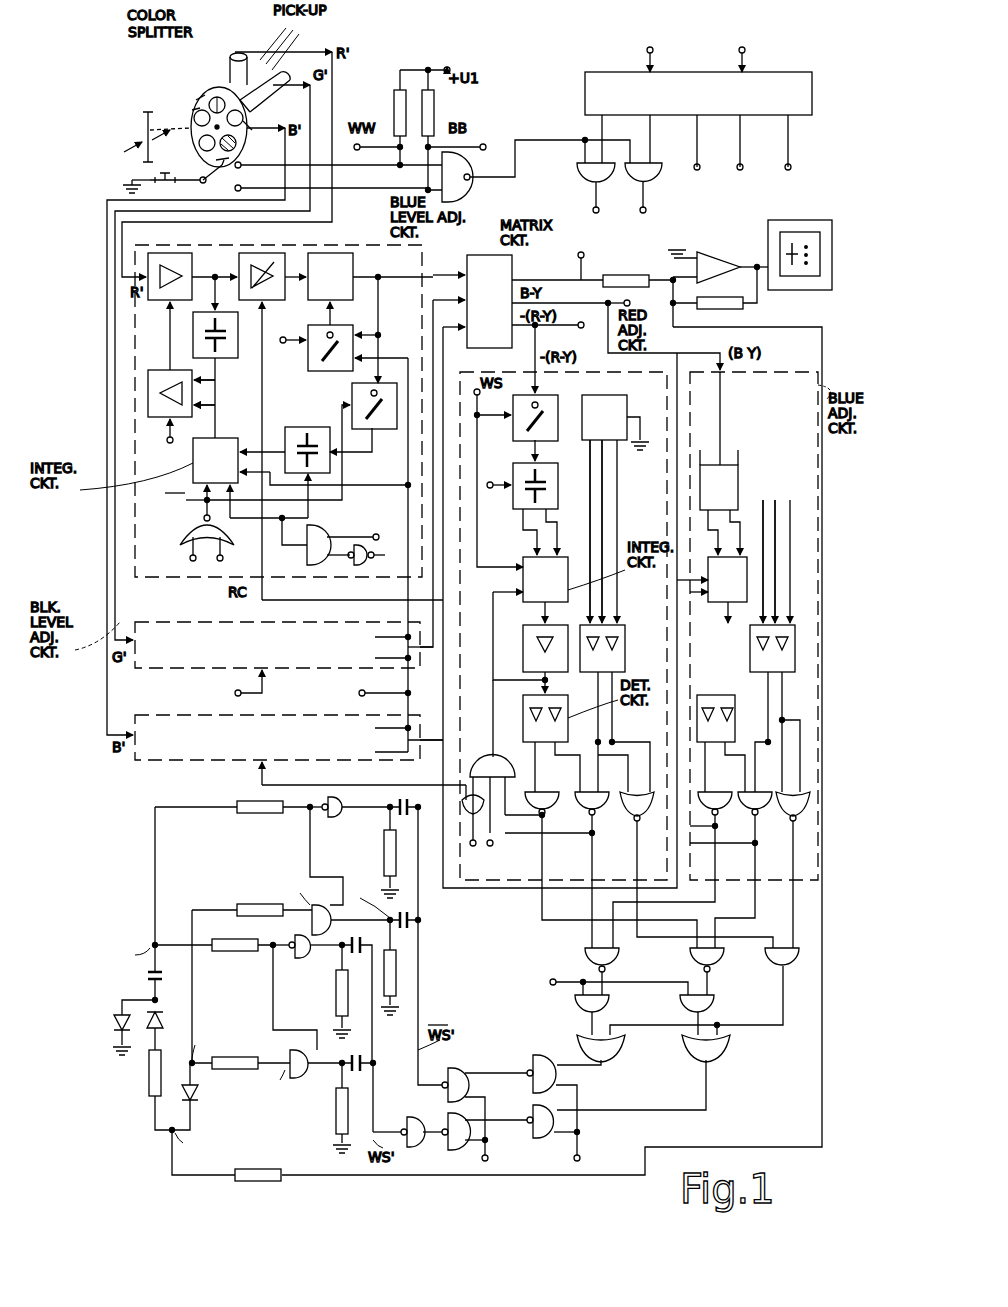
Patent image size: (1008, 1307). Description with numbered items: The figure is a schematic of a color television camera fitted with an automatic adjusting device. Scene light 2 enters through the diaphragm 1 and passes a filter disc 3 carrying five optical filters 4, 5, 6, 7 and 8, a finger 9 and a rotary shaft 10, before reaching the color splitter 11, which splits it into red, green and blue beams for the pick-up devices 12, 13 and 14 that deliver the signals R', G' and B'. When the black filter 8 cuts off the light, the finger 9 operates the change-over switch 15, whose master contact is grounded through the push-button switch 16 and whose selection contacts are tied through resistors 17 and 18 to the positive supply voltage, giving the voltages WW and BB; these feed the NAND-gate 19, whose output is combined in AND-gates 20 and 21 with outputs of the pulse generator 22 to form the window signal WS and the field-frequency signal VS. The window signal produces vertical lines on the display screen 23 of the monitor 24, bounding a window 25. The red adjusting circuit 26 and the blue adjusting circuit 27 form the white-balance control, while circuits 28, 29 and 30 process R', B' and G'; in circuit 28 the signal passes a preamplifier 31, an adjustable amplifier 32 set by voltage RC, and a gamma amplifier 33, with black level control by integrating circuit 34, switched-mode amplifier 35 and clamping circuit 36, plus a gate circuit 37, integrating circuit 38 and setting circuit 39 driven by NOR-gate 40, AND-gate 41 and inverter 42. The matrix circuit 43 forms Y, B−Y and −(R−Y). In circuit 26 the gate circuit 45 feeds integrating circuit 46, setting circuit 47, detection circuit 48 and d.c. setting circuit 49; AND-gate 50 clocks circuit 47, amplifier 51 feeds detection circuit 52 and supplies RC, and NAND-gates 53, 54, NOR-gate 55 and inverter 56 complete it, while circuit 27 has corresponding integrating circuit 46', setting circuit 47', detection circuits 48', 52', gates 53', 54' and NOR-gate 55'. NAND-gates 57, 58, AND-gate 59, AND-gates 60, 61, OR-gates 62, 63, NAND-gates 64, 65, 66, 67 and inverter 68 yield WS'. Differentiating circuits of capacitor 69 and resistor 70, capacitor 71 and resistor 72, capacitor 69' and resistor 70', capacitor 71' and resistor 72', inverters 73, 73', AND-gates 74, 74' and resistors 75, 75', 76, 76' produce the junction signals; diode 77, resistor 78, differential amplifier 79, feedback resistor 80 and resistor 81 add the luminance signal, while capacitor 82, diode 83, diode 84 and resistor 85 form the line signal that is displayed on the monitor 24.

The diaphragm 1 is at (143, 125).
The light 2 is at (128, 158).
The filter disc 3 is at (192, 108).
The optical filter 4 is at (201, 150).
The optical filter 5 is at (194, 118).
The optical filter 6 is at (216, 96).
The optical filter 7 is at (254, 135).
The black filter 8 is at (235, 148).
The finger 9 is at (197, 98).
The rotary shaft 10 is at (215, 128).
The color splitter 11 is at (176, 85).
The opto-electronic pick-up device 12 is at (239, 52).
The opto-electronic pick-up device 13 is at (269, 70).
The opto-electronic pick-up device 14 is at (244, 118).
The change-over switch 15 is at (238, 170).
The push-button momentary contact switch 16 is at (151, 191).
The resistor 17 is at (394, 105).
The resistor 18 is at (436, 110).
The NAND-gate 19 is at (462, 188).
The AND-gate 20 is at (577, 168).
The AND-gate 21 is at (660, 168).
The pulse generator 22 is at (585, 97).
The display screen 23 is at (780, 232).
The monitor 24 is at (820, 252).
The window 25 is at (790, 245).
The red adjusting circuit 26 is at (650, 460).
The blue adjusting circuit 27 is at (780, 372).
The automatic black level adjusting circuit 28 is at (387, 245).
The automatic black level control circuit 29 is at (152, 715).
The black level circuit 30 is at (152, 622).
The preamplifier 31 is at (188, 276).
The adjustable amplifier 32 is at (280, 300).
The gamma amplifier 33 is at (353, 276).
The integrating circuit 34 is at (245, 356).
The switched-mode amplifier 35 is at (192, 390).
The clamping circuit 36 is at (310, 372).
The gate circuit 37 is at (385, 430).
The integrating circuit 38 is at (310, 427).
The setting circuit 39 is at (255, 417).
The NOR-gate 40 is at (182, 535).
The AND-gate 41 is at (305, 560).
The inverter 42 is at (360, 568).
The matrix circuit 43 is at (492, 255).
The gate circuit 45 is at (548, 395).
The integrating circuit 46 is at (532, 508).
The integrating circuit 46' is at (720, 502).
The setting circuit 47 is at (530, 615).
The setting circuit 47' is at (712, 604).
The detection circuit 48 is at (616, 700).
The detection circuit 48' is at (746, 708).
The d.c. setting circuit 49 is at (630, 445).
The AND-gate 50 is at (512, 777).
The amplifier 51 is at (523, 636).
The detection circuit 52 is at (537, 738).
The detection circuit 52' is at (748, 733).
The NAND-gate 53 is at (601, 870).
The NAND-gate 53' is at (679, 870).
The NAND-gate 54 is at (563, 870).
The NAND-gate 54' is at (736, 870).
The NOR-gate 55 is at (685, 845).
The NOR-gate 55' is at (783, 870).
The inverter 56 is at (466, 798).
The NAND-gate 57 is at (620, 957).
The NAND-gate 58 is at (722, 957).
The AND-gate 59 is at (788, 968).
The AND-gate 60 is at (575, 1000).
The AND-gate 61 is at (717, 1003).
The OR-gate 62 is at (618, 1045).
The OR-gate 63 is at (722, 1045).
The NAND-gate 64 is at (540, 1058).
The NAND-gate 65 is at (535, 1135).
The NAND-gate 66 is at (450, 1070).
The NAND-gate 67 is at (450, 1150).
The inverter 68 is at (405, 1120).
The capacitor 69 is at (357, 1000).
The capacitor 69' is at (396, 852).
The resistor 70 is at (331, 991).
The resistor 70' is at (377, 852).
The capacitor 71 is at (372, 1083).
The capacitor 71' is at (420, 919).
The resistor 72 is at (328, 1108).
The resistor 72' is at (416, 967).
The inverter 73 is at (303, 950).
The inverter 73' is at (336, 851).
The AND-gate 74 is at (301, 1073).
The AND-gate 74' is at (336, 904).
The resistor 75 is at (240, 1046).
The resistor 75' is at (252, 970).
The resistor 76 is at (191, 958).
The resistor 76' is at (232, 873).
The diode 77 is at (198, 1093).
The resistor 78 is at (255, 1169).
The differential amplifier 79 is at (719, 252).
The negative feedback resistor 80 is at (740, 306).
The resistor 81 is at (628, 275).
The capacitor 82 is at (148, 977).
The diode 83 is at (120, 1055).
The diode 84 is at (152, 1002).
The resistor 85 is at (168, 1062).